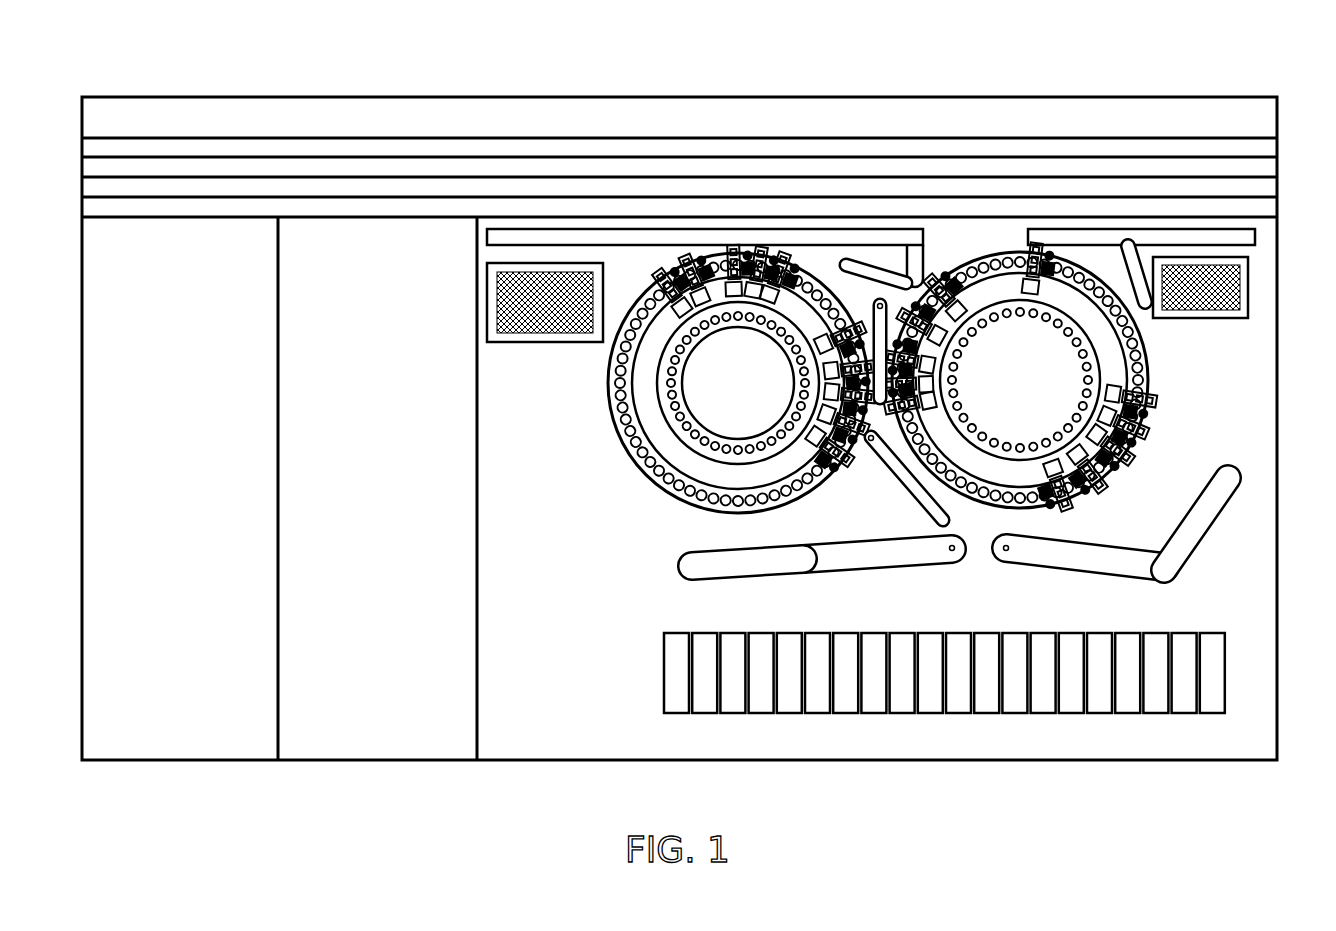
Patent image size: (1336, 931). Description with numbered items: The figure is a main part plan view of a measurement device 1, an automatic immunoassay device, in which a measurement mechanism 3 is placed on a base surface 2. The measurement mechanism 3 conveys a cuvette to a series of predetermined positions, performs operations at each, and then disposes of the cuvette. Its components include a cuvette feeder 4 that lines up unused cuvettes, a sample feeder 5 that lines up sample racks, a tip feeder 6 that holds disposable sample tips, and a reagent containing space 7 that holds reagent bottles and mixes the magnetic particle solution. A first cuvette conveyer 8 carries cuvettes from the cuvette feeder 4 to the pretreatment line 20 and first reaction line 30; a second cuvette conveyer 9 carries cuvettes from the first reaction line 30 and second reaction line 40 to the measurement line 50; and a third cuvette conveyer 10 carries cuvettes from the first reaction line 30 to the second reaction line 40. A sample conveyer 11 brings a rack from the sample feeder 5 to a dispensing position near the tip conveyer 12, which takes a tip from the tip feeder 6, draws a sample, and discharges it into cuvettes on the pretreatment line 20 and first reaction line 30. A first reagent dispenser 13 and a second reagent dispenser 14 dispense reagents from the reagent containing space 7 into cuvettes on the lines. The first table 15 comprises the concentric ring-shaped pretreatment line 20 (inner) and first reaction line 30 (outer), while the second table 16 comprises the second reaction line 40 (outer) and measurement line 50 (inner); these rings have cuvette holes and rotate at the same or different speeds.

The measurement device 1 is at (1114, 70).
The base surface 2 is at (1278, 346).
The measurement mechanism 3 is at (1157, 412).
The cuvette feeder 4 is at (505, 344).
The sample feeder 5 is at (357, 752).
The tip feeder 6 is at (1250, 288).
The reagent containing space 7 is at (1228, 727).
The first cuvette conveyer 8 is at (887, 237).
The second cuvette conveyer 9 is at (868, 305).
The third cuvette conveyer 10 is at (886, 464).
The sample conveyer 11 is at (1258, 168).
The tip conveyer 12 is at (1175, 237).
The first reagent dispenser 13 is at (1195, 534).
The second reagent dispenser 14 is at (692, 567).
The first table 15 is at (1103, 379).
The second table 16 is at (699, 394).
The pretreatment line 20 is at (1124, 444).
The first reaction line 30 is at (1146, 383).
The second reaction line 40 is at (632, 446).
The measurement line 50 is at (700, 452).